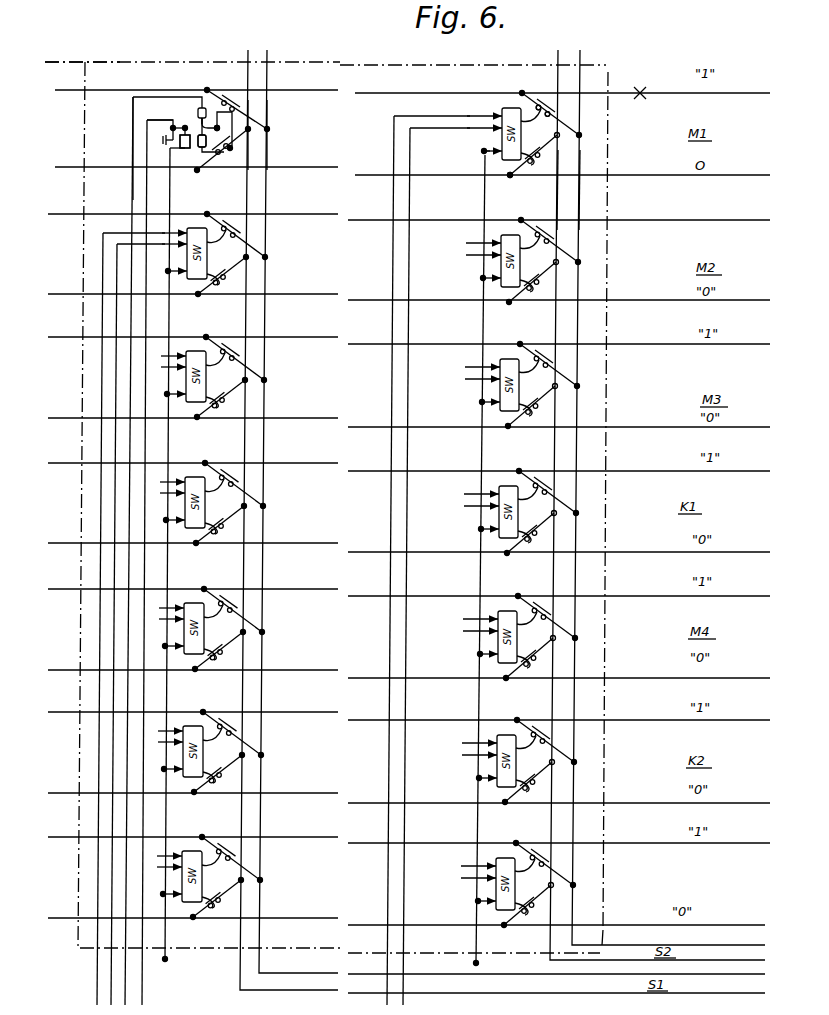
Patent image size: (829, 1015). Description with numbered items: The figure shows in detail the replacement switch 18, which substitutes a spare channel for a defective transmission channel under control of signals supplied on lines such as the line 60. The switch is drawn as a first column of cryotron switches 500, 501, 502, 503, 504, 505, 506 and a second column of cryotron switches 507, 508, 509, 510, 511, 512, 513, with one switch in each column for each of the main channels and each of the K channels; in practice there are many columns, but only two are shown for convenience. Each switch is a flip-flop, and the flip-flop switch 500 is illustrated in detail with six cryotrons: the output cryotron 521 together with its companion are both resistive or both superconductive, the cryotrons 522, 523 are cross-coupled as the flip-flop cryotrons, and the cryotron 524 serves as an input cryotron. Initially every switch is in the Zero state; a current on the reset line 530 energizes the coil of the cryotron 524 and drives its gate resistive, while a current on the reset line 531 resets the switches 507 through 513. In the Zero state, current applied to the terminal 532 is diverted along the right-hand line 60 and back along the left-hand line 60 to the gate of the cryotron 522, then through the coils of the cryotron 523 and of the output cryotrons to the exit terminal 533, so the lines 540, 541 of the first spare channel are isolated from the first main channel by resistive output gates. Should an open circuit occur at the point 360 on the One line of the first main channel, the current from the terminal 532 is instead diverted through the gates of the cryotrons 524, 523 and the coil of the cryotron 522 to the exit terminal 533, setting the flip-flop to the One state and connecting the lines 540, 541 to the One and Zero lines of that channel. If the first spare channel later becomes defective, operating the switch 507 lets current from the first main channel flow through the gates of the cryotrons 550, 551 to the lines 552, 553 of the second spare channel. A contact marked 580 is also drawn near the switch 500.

The replacement switch 18 is at (63, 58).
The line 60 is at (133, 147).
The point 360 is at (643, 85).
The cryotron switch 500 is at (130, 102).
The cryotron switch 501 is at (209, 244).
The cryotron switch 502 is at (208, 367).
The cryotron switch 503 is at (207, 493).
The cryotron switch 504 is at (206, 619).
The cryotron switch 505 is at (205, 742).
The cryotron switch 506 is at (204, 867).
The cryotron switch 507 is at (502, 148).
The cryotron switch 508 is at (501, 260).
The cryotron switch 509 is at (500, 384).
The cryotron switch 510 is at (499, 511).
The cryotron switch 511 is at (498, 636).
The cryotron switch 512 is at (497, 760).
The cryotron switch 513 is at (496, 883).
The output cryotron 521 is at (214, 162).
The flip-flop cryotron 522 is at (203, 110).
The flip-flop cryotron 523 is at (196, 160).
The input cryotron 524 is at (180, 153).
The reset line 530 is at (168, 962).
The reset line 531 is at (476, 942).
The terminal 532 is at (147, 120).
The exit terminal 533 is at (219, 128).
The line 540 is at (268, 143).
The line 541 is at (249, 158).
The cryotron 550 is at (548, 100).
The cryotron 551 is at (543, 162).
The line 552 is at (581, 187).
The line 553 is at (559, 207).
The switch contact 580 is at (238, 98).